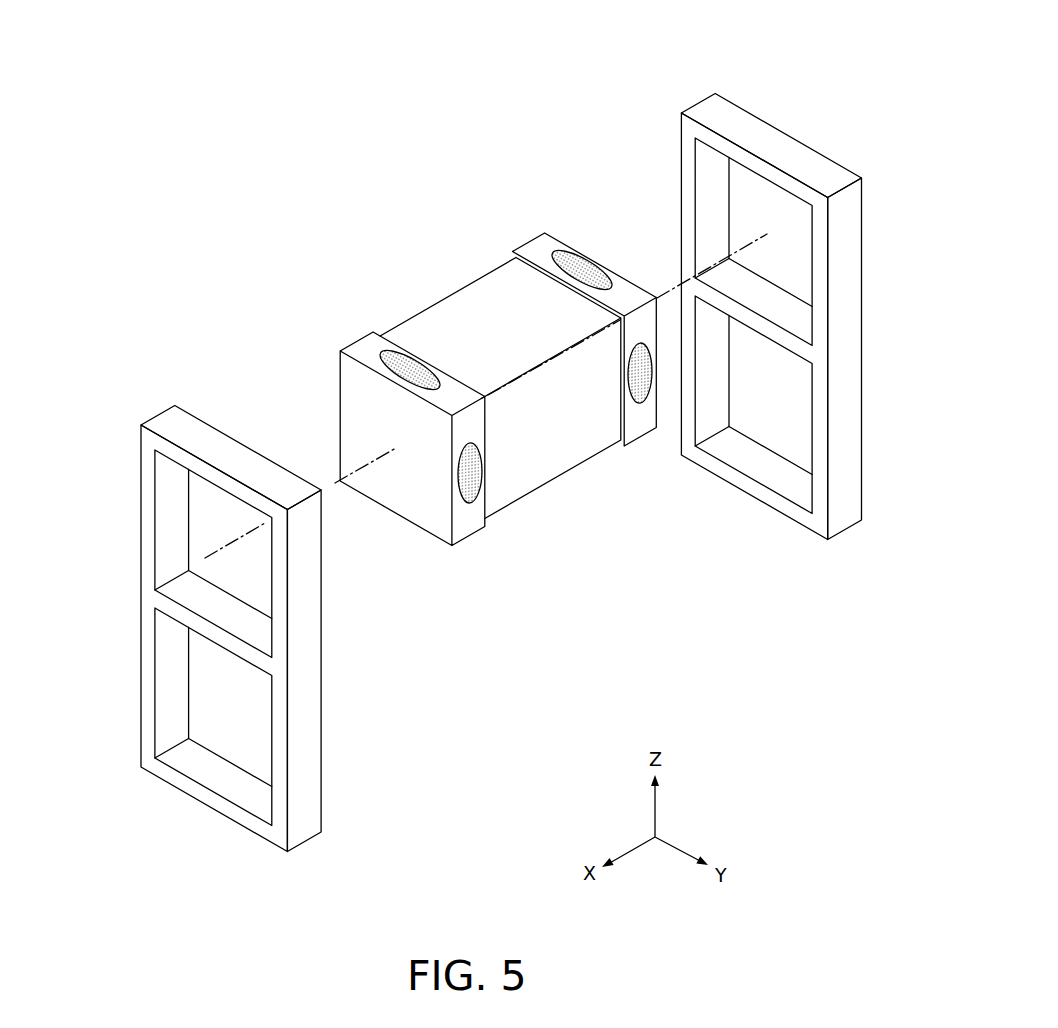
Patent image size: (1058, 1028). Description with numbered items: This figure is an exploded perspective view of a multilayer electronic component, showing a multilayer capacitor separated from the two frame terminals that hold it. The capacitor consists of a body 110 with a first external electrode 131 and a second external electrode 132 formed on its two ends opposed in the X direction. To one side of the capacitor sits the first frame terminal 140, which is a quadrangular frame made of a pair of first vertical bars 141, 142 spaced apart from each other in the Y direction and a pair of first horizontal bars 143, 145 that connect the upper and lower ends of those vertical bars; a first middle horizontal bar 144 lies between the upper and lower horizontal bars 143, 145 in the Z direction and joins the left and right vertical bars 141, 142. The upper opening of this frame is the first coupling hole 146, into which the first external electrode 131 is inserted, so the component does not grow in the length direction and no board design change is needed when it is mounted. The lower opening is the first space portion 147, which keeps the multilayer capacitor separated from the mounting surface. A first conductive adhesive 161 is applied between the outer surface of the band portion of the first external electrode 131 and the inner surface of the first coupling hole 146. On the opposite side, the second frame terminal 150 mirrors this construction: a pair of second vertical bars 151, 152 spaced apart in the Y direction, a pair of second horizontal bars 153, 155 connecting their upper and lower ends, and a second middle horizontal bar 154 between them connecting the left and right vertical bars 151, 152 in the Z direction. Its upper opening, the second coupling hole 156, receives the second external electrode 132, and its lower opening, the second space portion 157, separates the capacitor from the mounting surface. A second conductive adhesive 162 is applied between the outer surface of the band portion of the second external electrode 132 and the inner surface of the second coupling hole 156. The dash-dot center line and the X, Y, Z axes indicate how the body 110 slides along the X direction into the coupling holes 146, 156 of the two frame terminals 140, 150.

The body 110 is at (468, 375).
The first external electrode 131 is at (413, 424).
The second external electrode 132 is at (554, 304).
The first frame terminal 140 is at (241, 586).
The first vertical bar 141 is at (165, 675).
The first vertical bar 142 is at (315, 750).
The first upper horizontal bar 143 is at (222, 443).
The first middle horizontal bar 144 is at (200, 605).
The first lower horizontal bar 145 is at (222, 785).
The first coupling hole 146 is at (213, 531).
The first space portion 147 is at (215, 708).
The second frame terminal 150 is at (773, 301).
The second vertical bar 151 is at (704, 189).
The second vertical bar 152 is at (852, 255).
The second upper horizontal bar 153 is at (808, 161).
The second middle horizontal bar 154 is at (790, 278).
The second lower horizontal bar 155 is at (790, 483).
The second coupling hole 156 is at (766, 205).
The second space portion 157 is at (773, 411).
The first conductive adhesive 161 is at (487, 477).
The second conductive adhesive 162 is at (585, 258).